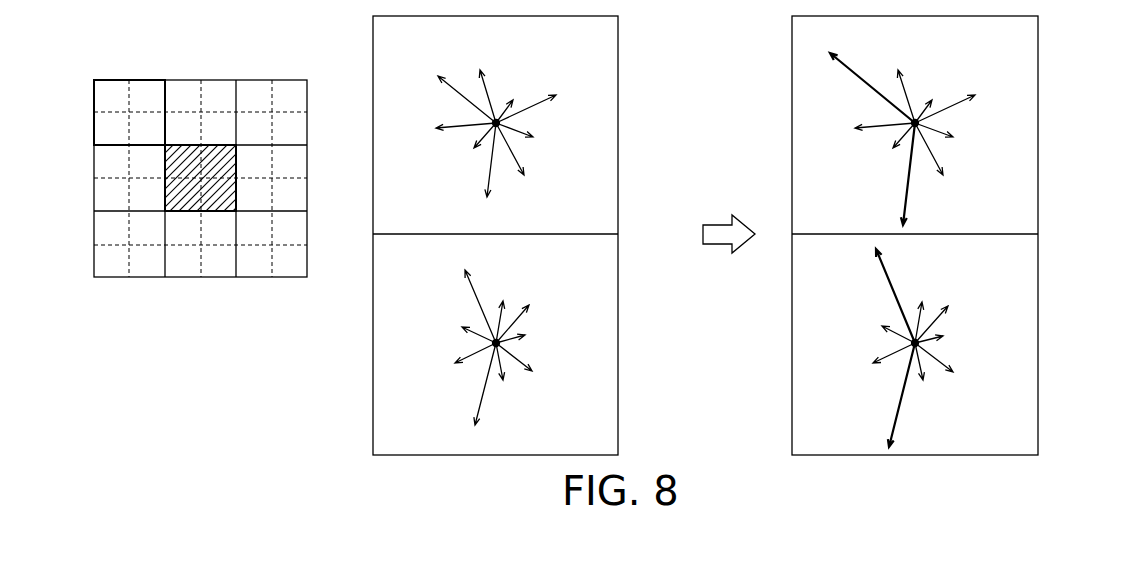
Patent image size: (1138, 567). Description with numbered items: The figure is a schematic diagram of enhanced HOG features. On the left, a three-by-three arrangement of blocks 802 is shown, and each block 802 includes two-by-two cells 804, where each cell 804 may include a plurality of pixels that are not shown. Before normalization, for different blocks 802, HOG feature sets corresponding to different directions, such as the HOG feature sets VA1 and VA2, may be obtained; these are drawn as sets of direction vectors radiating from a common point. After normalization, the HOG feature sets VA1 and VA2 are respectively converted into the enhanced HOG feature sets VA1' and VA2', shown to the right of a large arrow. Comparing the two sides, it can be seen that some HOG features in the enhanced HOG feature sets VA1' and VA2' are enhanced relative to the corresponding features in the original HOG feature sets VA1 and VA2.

The block 802 is at (187, 212).
The cell 804 is at (113, 98).
The HOG feature set VA1 is at (561, 133).
The HOG feature set VA2 is at (570, 347).
The enhanced HOG feature set VA1' is at (970, 139).
The enhanced HOG feature set VA2' is at (991, 348).